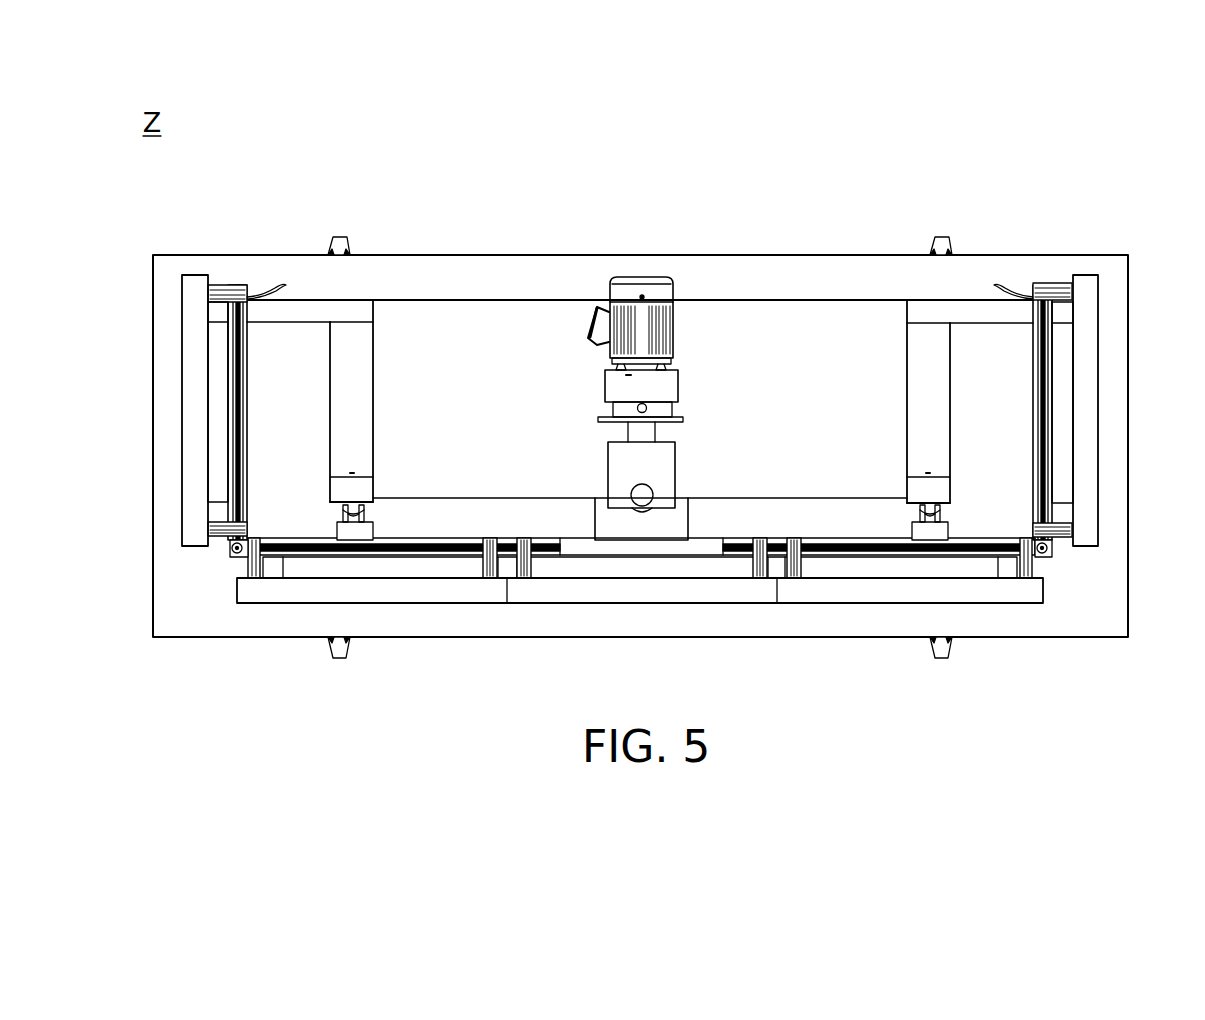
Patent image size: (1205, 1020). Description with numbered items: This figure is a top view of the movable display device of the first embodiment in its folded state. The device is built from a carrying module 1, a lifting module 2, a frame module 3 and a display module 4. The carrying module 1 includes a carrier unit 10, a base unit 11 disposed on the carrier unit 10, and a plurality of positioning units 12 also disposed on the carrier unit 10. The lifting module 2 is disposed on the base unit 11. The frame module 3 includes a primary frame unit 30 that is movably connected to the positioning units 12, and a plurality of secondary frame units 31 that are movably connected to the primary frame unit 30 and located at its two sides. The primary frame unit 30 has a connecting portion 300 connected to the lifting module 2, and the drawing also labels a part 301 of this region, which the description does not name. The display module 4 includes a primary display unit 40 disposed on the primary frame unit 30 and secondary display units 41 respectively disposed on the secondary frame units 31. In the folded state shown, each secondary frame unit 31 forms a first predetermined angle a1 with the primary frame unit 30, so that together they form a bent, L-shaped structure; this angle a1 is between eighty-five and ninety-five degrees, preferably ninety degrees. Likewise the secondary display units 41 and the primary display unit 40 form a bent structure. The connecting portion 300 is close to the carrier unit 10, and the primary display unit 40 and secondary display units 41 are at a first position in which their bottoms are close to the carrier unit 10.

The carrying module 1 is at (282, 184).
The carrier unit 10 is at (303, 261).
The base unit 11 is at (512, 306).
The positioning units 12 is at (373, 365).
The lifting module 2 is at (668, 388).
The frame module 3 is at (97, 325).
The primary frame unit 30 is at (574, 543).
The secondary frame units 31 is at (233, 348).
The connecting portion 300 is at (628, 525).
The brackets 301 is at (353, 532).
The display module 4 is at (278, 687).
The primary display unit 40 is at (272, 604).
The secondary display units 41 is at (184, 510).
The first predetermined angle a1 is at (250, 485).